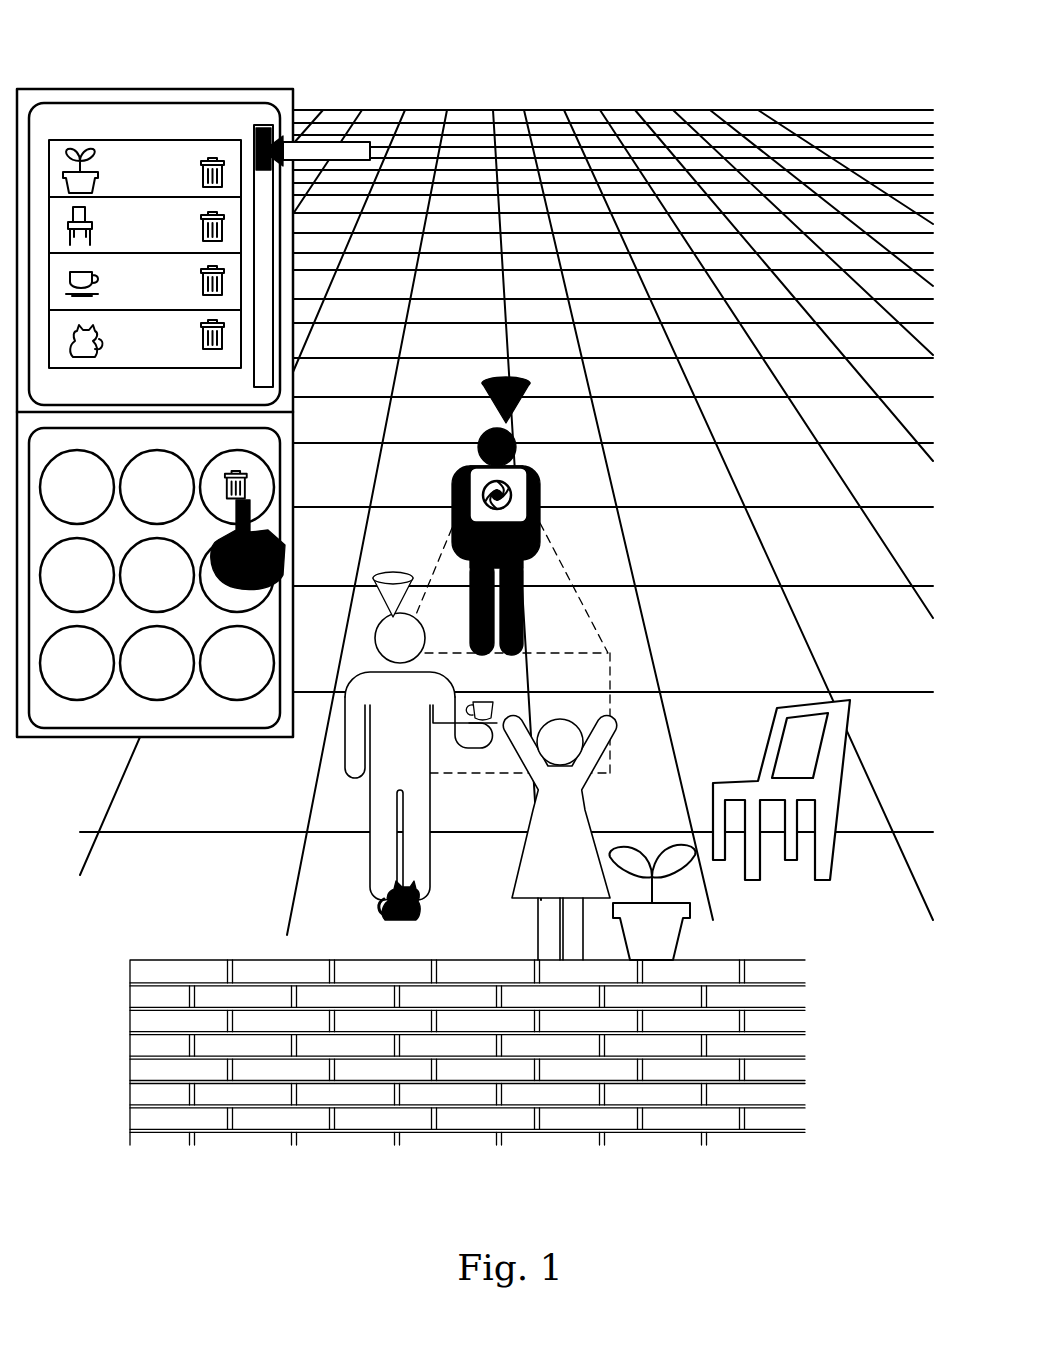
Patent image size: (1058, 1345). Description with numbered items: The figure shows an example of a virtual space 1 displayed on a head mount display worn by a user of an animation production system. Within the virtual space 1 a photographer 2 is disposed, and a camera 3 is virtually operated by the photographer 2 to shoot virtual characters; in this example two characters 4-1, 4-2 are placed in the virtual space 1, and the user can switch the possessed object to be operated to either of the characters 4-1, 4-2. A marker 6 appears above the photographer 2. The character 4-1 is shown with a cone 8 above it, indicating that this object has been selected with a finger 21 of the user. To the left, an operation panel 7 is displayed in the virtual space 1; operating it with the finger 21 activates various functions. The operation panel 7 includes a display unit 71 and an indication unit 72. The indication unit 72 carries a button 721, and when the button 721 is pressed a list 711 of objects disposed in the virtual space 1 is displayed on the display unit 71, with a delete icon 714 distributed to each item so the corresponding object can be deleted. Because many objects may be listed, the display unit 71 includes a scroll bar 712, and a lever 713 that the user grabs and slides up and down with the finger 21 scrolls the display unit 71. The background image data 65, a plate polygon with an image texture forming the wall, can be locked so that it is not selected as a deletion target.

The virtual space 1 is at (778, 66).
The photographer 2 is at (507, 527).
The camera 3 is at (522, 482).
The character 4-1 is at (345, 779).
The character 4-2 is at (590, 786).
The user position marker 6 is at (510, 378).
The operation panel 7 is at (197, 404).
The cone 8 is at (390, 578).
The finger 21 is at (285, 558).
The background image data 65 is at (805, 1055).
The display unit 71 is at (203, 214).
The list 711 is at (151, 204).
The scroll bar 712 is at (264, 125).
The lever 713 is at (343, 142).
The delete icon 714 is at (212, 147).
The indication unit 72 is at (190, 607).
The button 721 is at (263, 497).